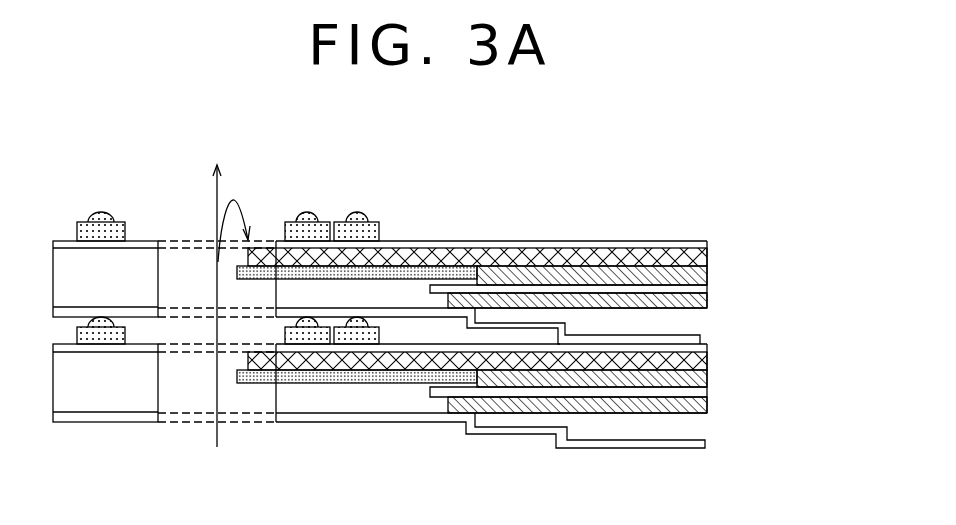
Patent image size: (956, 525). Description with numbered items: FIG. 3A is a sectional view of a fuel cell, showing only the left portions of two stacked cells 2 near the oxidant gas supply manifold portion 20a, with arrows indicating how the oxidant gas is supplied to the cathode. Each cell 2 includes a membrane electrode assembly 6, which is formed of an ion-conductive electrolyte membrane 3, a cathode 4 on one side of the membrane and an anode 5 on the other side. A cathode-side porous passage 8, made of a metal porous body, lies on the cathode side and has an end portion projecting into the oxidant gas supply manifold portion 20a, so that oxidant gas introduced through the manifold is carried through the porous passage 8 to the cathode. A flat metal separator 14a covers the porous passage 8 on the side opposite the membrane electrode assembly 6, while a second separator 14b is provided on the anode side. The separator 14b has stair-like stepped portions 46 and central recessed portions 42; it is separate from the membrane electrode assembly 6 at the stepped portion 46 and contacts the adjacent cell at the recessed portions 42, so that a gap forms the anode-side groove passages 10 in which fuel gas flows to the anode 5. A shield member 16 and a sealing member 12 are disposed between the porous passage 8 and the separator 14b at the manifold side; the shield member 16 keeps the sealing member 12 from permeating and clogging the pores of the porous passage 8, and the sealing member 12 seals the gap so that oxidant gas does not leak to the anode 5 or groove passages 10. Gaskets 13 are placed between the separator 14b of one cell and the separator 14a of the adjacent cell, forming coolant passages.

The cell 2 is at (585, 213).
The oxidant gas supply manifold portion 20a is at (190, 247).
The separator 14a is at (707, 245).
The separator 14b is at (707, 340).
The cathode-side porous passage 8 is at (707, 263).
The cathode 4 is at (707, 281).
The electrolyte membrane 3 is at (707, 290).
The anode 5 is at (707, 302).
The membrane electrode assembly 6 is at (791, 265).
The anode-side groove passage 10 is at (688, 323).
The sealing member 12 is at (392, 290).
The gasket 13 is at (358, 325).
The shield member 16 is at (452, 248).
The stepped portion 46 is at (513, 323).
The recessed portion 42 is at (655, 338).